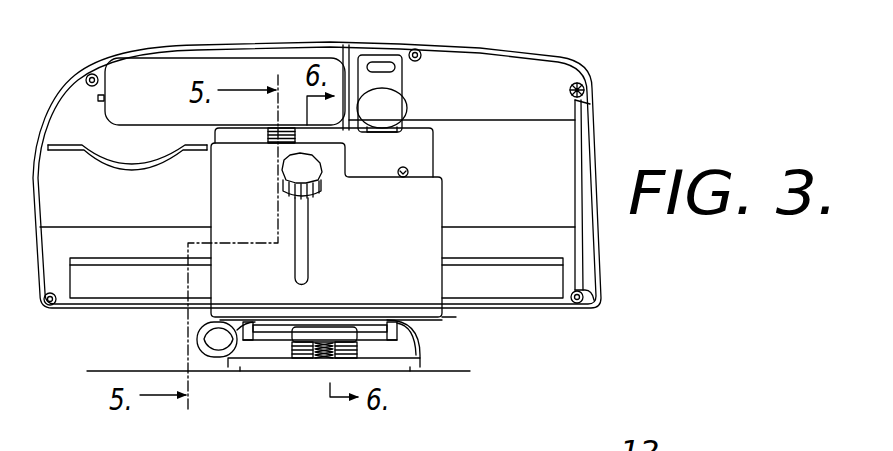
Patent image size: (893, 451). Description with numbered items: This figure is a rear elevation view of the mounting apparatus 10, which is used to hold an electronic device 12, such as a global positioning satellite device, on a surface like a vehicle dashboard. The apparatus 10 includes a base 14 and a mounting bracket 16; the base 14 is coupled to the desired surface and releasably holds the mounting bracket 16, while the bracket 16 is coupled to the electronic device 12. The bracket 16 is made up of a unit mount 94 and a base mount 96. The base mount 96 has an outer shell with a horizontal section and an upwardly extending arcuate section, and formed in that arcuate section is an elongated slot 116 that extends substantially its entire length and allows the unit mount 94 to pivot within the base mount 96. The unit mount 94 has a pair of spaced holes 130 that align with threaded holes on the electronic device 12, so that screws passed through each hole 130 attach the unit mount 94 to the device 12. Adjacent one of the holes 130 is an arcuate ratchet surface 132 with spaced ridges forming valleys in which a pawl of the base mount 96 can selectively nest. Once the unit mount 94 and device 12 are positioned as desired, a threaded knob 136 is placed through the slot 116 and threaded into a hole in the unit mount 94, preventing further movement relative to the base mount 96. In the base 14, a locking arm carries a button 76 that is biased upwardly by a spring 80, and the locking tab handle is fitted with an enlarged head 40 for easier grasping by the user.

The mounting apparatus 10 is at (457, 317).
The electronic device 12 is at (451, 47).
The base 14 is at (428, 354).
The mounting bracket 16 is at (442, 323).
The enlarged head 40 is at (197, 335).
The button 76 is at (293, 340).
The spring 80 is at (318, 352).
The unit mount 94 is at (430, 147).
The base mount 96 is at (437, 215).
The elongated slot 116 is at (310, 251).
The spaced holes 130 is at (408, 170).
The arcuate ratchet surface 132 is at (268, 138).
The threaded knob 136 is at (322, 186).